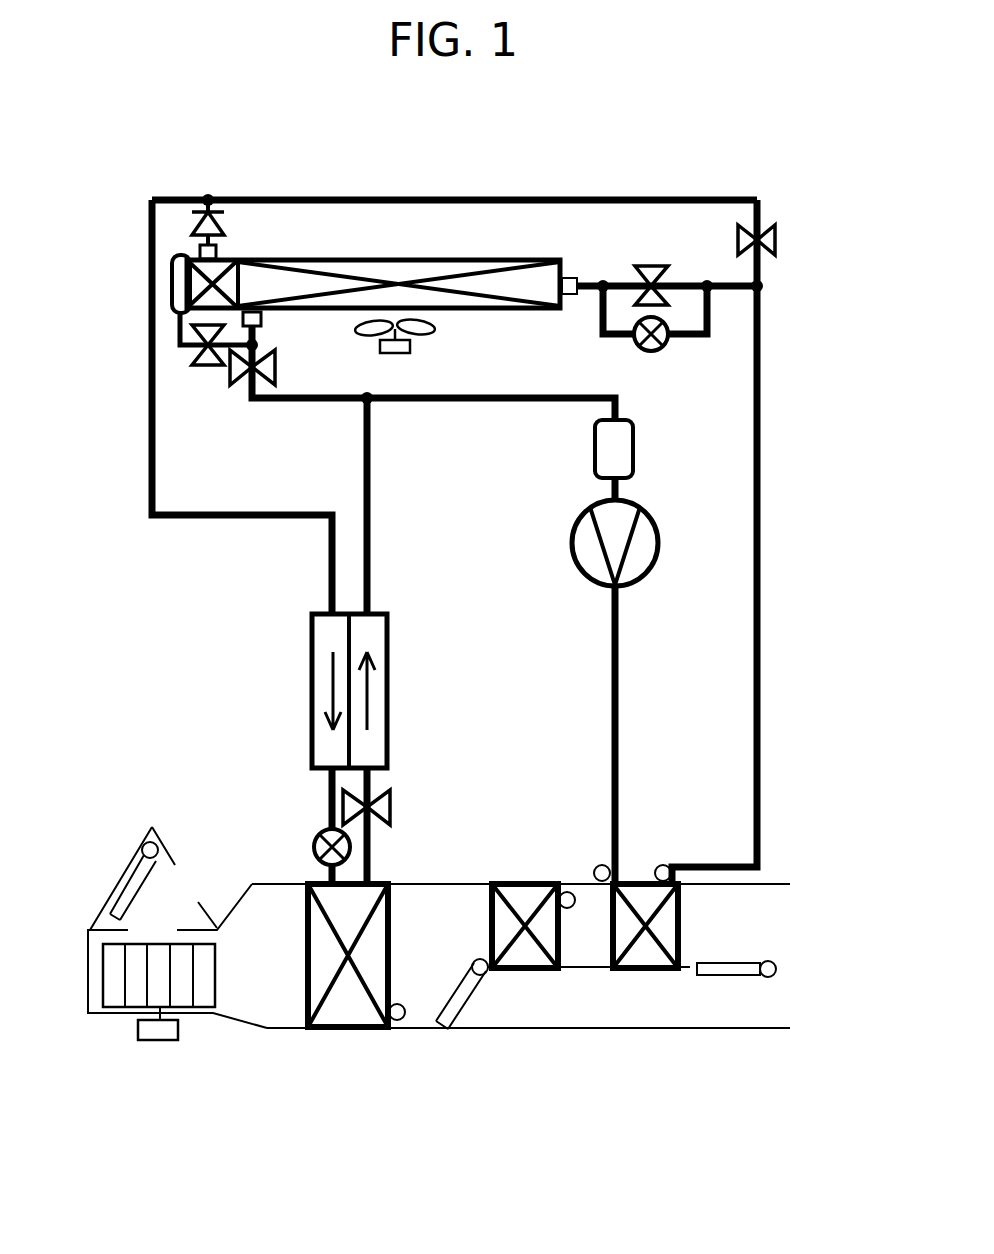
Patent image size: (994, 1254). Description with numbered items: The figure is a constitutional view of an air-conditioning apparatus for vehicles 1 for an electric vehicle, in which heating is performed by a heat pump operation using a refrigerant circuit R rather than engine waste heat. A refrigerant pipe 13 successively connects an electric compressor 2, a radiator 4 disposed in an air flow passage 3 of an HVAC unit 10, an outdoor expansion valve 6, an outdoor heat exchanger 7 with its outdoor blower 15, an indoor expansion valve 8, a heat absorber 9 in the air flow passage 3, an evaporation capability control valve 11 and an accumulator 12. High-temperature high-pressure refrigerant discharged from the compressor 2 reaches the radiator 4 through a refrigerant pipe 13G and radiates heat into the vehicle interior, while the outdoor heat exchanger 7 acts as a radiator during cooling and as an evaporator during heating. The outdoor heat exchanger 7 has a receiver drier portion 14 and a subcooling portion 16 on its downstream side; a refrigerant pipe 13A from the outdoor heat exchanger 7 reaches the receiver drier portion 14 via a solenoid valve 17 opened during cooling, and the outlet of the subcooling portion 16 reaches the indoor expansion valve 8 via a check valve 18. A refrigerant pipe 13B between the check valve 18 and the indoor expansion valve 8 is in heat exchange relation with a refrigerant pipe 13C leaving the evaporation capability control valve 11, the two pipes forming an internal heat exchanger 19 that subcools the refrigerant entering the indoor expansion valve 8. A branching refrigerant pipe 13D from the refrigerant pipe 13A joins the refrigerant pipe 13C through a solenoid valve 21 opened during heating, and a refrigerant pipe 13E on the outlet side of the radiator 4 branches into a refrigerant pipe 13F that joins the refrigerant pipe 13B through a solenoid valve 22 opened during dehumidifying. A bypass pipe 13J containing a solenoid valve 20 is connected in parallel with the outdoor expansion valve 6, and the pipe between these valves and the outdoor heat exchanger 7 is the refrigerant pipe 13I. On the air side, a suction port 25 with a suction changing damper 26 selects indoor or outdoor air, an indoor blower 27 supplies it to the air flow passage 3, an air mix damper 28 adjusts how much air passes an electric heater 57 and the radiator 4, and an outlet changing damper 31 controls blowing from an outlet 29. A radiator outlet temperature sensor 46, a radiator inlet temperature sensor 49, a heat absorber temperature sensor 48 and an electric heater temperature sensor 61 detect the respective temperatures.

The air-conditioning apparatus for vehicles 1 is at (801, 472).
The compressor 2 is at (572, 545).
The air flow passage 3 is at (426, 847).
The radiator 4 is at (681, 918).
The outdoor expansion valve 6 is at (651, 352).
The outdoor heat exchanger 7 is at (395, 258).
The indoor expansion valve 8 is at (314, 843).
The heat absorber 9 is at (305, 965).
The HVAC unit 10 is at (470, 868).
The evaporation capability control valve 11 is at (392, 805).
The accumulator 12 is at (635, 448).
The refrigerant pipe 13 is at (781, 383).
The refrigerant pipe 13A is at (262, 330).
The refrigerant pipe 13B is at (329, 567).
The refrigerant pipe 13C is at (371, 471).
The refrigerant pipe 13D is at (290, 402).
The refrigerant pipe 13E is at (761, 545).
The refrigerant pipe 13F is at (497, 200).
The refrigerant pipe 13G is at (611, 632).
The refrigerant pipe 13I is at (588, 292).
The bypass pipe 13J is at (616, 282).
The receiver drier portion 14 is at (172, 288).
The outdoor blower 15 is at (436, 325).
The subcooling portion 16 is at (216, 250).
The solenoid valve 17 is at (208, 368).
The check valve 18 is at (198, 225).
The internal heat exchanger 19 is at (310, 662).
The solenoid valve 20 is at (655, 266).
The solenoid valve 21 is at (277, 372).
The solenoid valve 22 is at (778, 242).
The suction port 25 is at (190, 885).
The suction changing damper 26 is at (125, 883).
The indoor blower 27 is at (100, 976).
The air mix damper 28 is at (450, 1020).
The outlet 29 is at (760, 937).
The outlet changing damper 31 is at (730, 978).
The radiator outlet temperature sensor 46 is at (663, 865).
The heat absorber temperature sensor 48 is at (397, 1021).
The radiator inlet temperature sensor 49 is at (602, 865).
The electric heater 57 is at (565, 937).
The electric heater temperature sensor 61 is at (565, 892).
The refrigerant circuit R is at (185, 634).